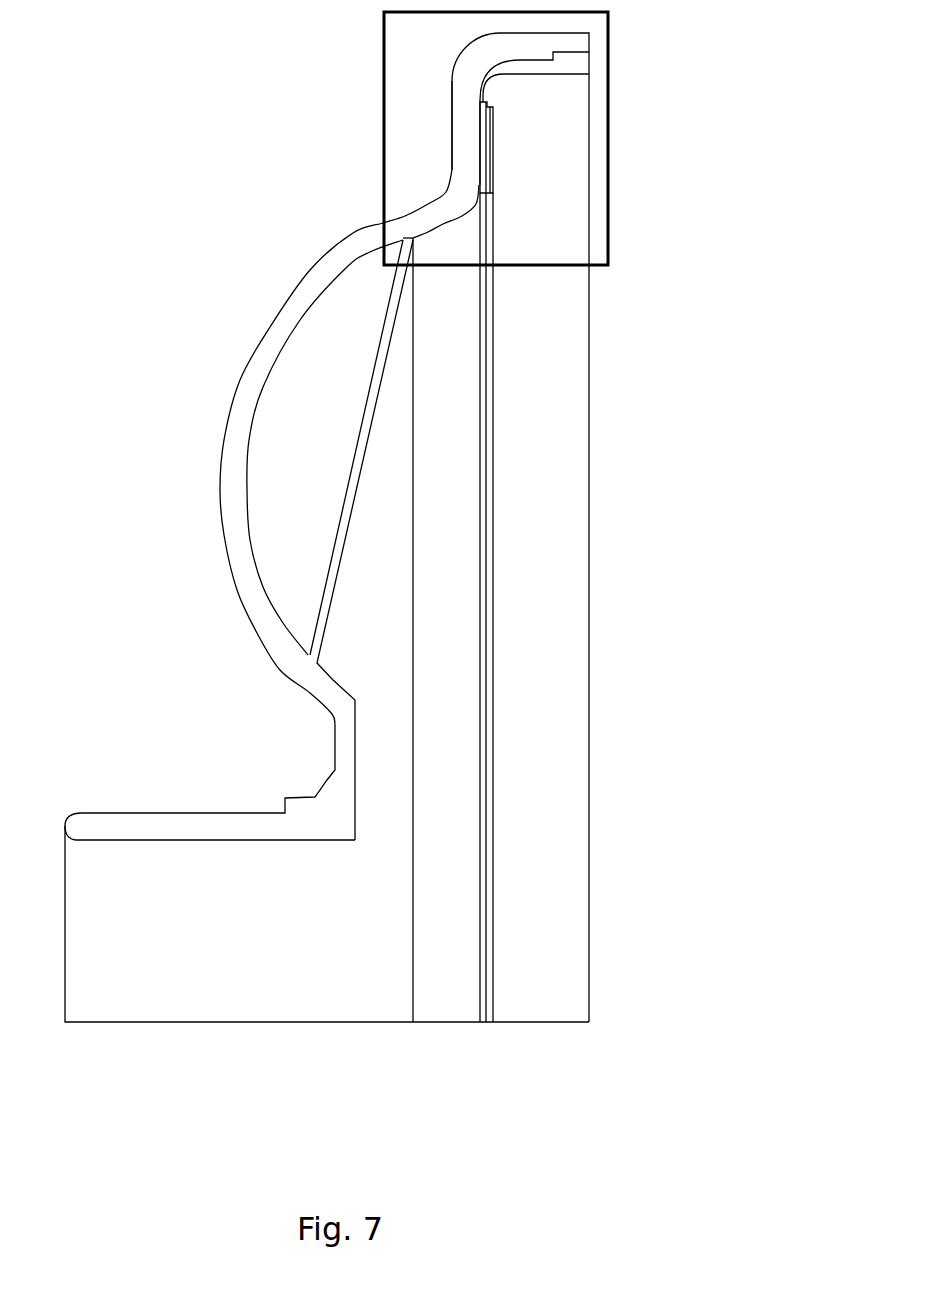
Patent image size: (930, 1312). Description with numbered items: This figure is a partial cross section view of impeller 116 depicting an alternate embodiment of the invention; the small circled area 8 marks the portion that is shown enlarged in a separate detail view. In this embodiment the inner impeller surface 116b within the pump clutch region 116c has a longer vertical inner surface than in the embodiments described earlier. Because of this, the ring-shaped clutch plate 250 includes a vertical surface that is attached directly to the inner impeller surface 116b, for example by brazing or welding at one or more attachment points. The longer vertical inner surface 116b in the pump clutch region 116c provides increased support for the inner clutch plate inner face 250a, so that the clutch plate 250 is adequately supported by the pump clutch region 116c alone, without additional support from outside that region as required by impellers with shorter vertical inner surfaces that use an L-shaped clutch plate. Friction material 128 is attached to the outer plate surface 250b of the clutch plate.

The circled area 8 is at (608, 118).
The impeller 116 is at (250, 383).
The inner impeller surface 116b is at (487, 72).
The pump clutch region 116c is at (430, 137).
The friction material 128 is at (495, 167).
The ring-shaped clutch plate 250 is at (480, 113).
The inner clutch plate inner face 250a is at (481, 135).
The outer plate surface 250b is at (589, 74).